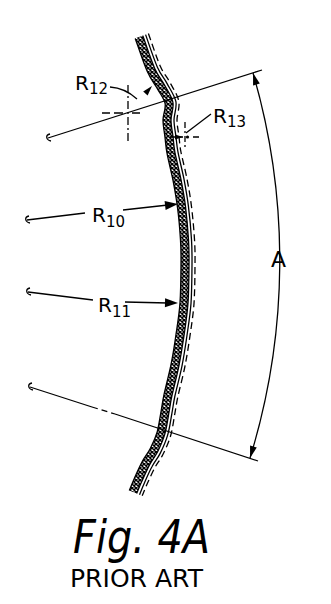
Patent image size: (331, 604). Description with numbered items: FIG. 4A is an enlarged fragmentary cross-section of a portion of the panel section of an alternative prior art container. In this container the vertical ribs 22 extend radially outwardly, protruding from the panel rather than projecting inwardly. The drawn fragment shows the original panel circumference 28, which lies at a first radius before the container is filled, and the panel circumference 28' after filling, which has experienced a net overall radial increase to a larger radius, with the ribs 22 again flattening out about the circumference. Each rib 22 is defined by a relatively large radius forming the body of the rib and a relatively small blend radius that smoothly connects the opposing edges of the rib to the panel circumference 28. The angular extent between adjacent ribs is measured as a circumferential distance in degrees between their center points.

The vertical ribs 22 is at (201, 264).
The original panel circumference 28 is at (159, 265).
The panel circumference after filling 28' is at (208, 265).